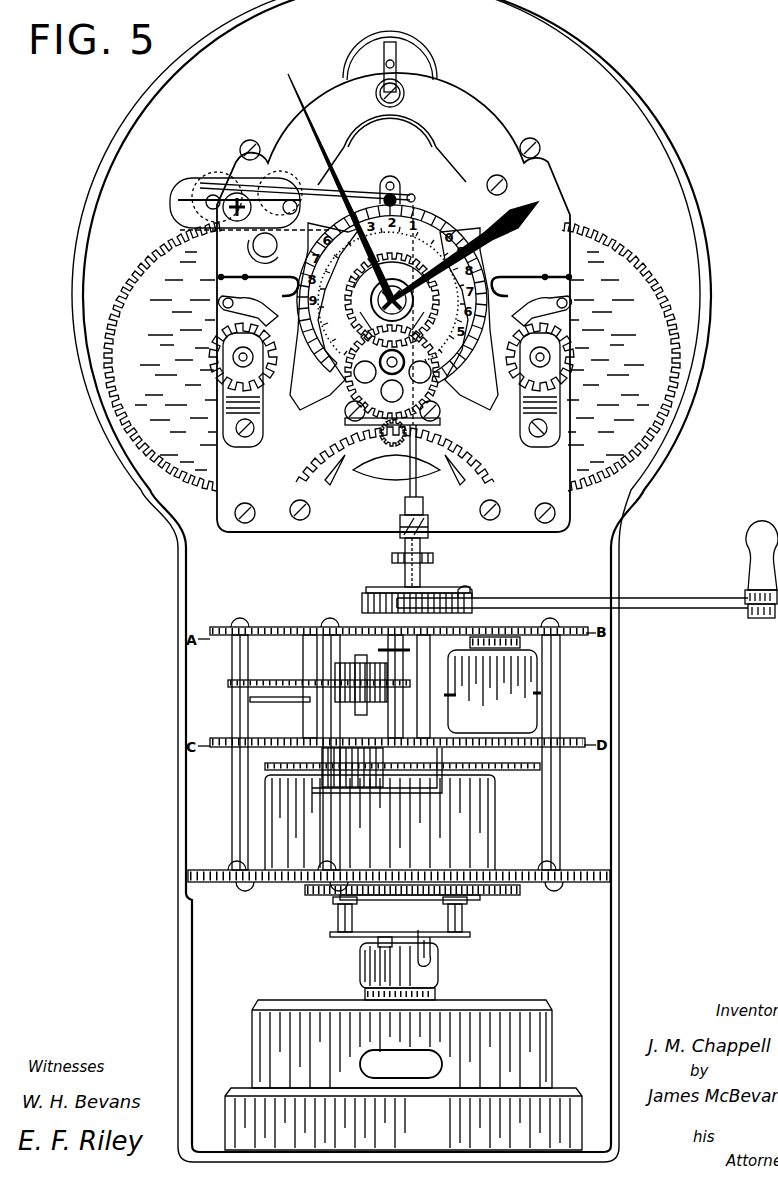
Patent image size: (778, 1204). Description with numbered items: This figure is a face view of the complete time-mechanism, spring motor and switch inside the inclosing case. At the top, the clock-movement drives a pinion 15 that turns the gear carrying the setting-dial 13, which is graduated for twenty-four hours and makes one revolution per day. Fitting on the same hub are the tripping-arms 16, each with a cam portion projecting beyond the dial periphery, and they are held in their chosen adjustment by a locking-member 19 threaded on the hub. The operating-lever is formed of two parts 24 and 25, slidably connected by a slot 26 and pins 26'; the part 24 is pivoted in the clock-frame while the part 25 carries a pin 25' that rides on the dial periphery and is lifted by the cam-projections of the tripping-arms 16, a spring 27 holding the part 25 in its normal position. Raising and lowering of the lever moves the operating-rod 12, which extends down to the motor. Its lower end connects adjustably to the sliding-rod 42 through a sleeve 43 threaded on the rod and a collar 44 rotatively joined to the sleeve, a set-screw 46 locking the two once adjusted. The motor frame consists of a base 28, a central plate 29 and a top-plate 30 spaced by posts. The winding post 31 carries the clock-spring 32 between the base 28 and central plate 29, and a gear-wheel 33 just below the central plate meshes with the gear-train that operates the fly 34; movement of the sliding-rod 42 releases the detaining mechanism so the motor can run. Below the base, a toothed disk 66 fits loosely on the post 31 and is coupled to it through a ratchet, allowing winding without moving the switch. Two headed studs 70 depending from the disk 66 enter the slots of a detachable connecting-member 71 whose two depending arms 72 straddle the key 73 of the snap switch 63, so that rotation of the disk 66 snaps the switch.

The operating-rod 12 is at (410, 462).
The setting-dial 13 is at (465, 355).
The pinion 15 is at (440, 421).
The tripping-arms 16 is at (312, 268).
The locking-member 19 is at (452, 236).
The operating-lever part 24 is at (205, 190).
The operating-lever part 25 is at (388, 178).
The pin 25' is at (426, 191).
The slot 26 is at (231, 221).
The pins 26' is at (258, 185).
The spring 27 is at (253, 245).
The base 28 is at (282, 884).
The central plate or diaphragm 29 is at (578, 738).
The top-plate 30 is at (595, 636).
The winding post 31 is at (358, 660).
The clock-spring 32 is at (482, 812).
The gear-wheel 33 is at (490, 768).
The fly 34 is at (460, 708).
The sliding-rod 42 is at (432, 590).
The sleeve 43 is at (432, 566).
The collar 44 is at (427, 522).
The set-screw 46 is at (402, 524).
The switch 63 is at (535, 1027).
The toothed wheel or disk 66 is at (490, 894).
The headed studs 70 is at (336, 918).
The connecting-member 71 is at (440, 938).
The depending arms 72 is at (372, 941).
The key 73 is at (362, 968).